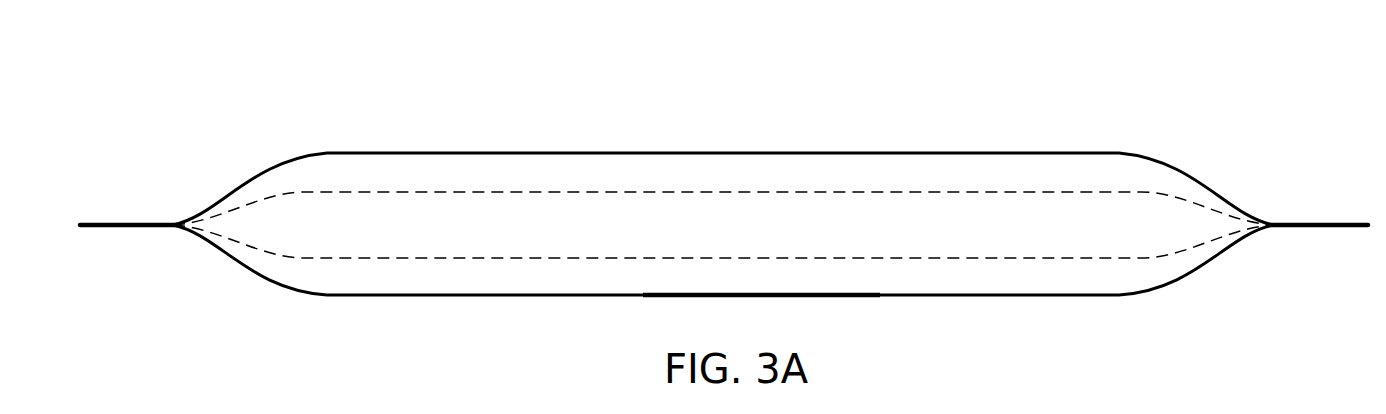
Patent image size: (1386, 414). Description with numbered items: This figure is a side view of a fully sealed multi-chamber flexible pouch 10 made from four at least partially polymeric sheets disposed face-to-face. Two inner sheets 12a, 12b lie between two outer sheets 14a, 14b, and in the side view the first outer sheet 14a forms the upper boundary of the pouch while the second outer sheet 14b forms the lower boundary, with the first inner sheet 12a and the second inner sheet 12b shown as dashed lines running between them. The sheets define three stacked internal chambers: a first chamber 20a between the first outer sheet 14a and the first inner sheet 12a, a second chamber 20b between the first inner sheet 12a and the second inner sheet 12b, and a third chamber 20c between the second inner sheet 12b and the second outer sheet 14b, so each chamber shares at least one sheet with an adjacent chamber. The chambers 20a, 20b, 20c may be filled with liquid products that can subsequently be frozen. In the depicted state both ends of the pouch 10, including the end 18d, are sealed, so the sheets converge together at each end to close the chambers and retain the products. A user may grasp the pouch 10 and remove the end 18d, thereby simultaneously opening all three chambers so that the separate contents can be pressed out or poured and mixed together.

The multi-chamber flexible pouch 10 is at (937, 101).
The end 18d is at (110, 222).
The first outer sheet 14a is at (522, 153).
The second outer sheet 14b is at (472, 295).
The first inner sheet 12a is at (692, 192).
The second inner sheet 12b is at (568, 258).
The first chamber 20a is at (452, 180).
The second chamber 20b is at (413, 230).
The third chamber 20c is at (413, 282).